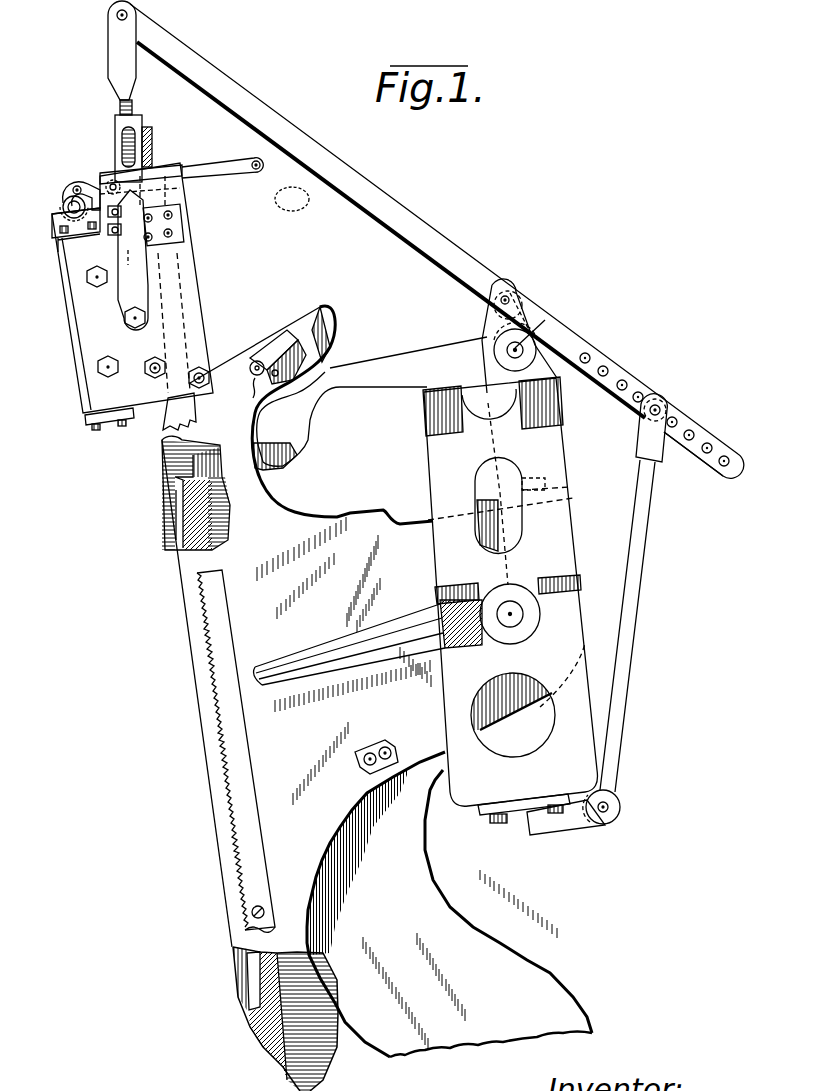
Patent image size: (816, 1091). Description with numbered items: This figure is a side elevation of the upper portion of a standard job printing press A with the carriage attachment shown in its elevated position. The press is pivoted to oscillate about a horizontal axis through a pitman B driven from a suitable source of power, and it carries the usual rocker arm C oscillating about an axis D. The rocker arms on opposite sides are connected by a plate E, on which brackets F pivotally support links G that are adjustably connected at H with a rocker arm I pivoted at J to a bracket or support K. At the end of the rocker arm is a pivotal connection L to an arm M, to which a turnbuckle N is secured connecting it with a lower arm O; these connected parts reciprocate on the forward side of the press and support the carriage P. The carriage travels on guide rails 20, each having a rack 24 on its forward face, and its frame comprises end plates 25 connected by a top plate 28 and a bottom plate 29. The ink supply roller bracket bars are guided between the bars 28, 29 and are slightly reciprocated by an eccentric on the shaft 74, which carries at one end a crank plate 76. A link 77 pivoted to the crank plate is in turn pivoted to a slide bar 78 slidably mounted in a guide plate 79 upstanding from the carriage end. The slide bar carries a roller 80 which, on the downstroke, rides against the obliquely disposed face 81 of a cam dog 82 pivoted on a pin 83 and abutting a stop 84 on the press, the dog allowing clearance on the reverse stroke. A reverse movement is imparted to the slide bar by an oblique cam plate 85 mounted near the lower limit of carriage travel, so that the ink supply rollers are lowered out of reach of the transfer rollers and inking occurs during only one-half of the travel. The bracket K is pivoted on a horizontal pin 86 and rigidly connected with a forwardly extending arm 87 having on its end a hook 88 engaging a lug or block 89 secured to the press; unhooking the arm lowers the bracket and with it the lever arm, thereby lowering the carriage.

The rocker arm I is at (575, 350).
The horizontal pin 86 is at (545, 320).
The pivotal connection L is at (136, 9).
The arm M is at (118, 60).
The turnbuckle N is at (118, 105).
The link 77 is at (108, 180).
The guide plate 79 is at (150, 177).
The slide bar 78 is at (194, 172).
The roller 80 is at (292, 199).
The crank plate 76 is at (70, 188).
The shaft 74 is at (62, 207).
The top plate 28 is at (62, 240).
The carriage P is at (90, 343).
The lower arm O is at (130, 262).
The end plate 25 is at (104, 290).
The bottom plate 29 is at (95, 415).
The obliquely disposed face 81 is at (325, 288).
The cam dog 82 is at (270, 347).
The pin 83 is at (253, 398).
The stop 84 is at (285, 395).
The forwardly extending arm 87 is at (387, 368).
The bracket K is at (500, 328).
The pivot J is at (510, 297).
The job printing press A is at (484, 591).
The axis D is at (510, 612).
The pitman B is at (367, 642).
The rocker arm C is at (527, 700).
The cam plate 85 is at (358, 757).
The plate E is at (515, 807).
The bracket F is at (575, 820).
The link G is at (638, 620).
The adjustable connection H is at (668, 398).
The rack 24 is at (210, 620).
The hook 88 is at (175, 480).
The lug or block 89 is at (167, 510).
The guide rail 20 is at (213, 604).